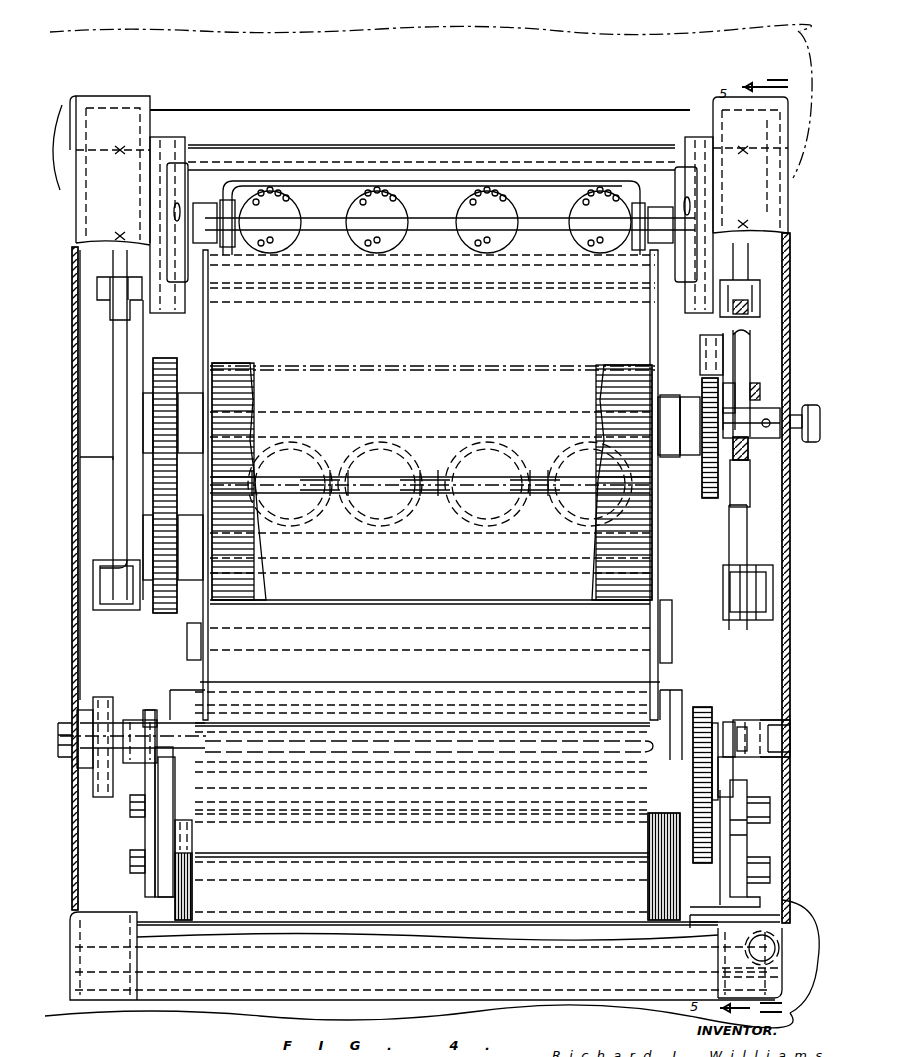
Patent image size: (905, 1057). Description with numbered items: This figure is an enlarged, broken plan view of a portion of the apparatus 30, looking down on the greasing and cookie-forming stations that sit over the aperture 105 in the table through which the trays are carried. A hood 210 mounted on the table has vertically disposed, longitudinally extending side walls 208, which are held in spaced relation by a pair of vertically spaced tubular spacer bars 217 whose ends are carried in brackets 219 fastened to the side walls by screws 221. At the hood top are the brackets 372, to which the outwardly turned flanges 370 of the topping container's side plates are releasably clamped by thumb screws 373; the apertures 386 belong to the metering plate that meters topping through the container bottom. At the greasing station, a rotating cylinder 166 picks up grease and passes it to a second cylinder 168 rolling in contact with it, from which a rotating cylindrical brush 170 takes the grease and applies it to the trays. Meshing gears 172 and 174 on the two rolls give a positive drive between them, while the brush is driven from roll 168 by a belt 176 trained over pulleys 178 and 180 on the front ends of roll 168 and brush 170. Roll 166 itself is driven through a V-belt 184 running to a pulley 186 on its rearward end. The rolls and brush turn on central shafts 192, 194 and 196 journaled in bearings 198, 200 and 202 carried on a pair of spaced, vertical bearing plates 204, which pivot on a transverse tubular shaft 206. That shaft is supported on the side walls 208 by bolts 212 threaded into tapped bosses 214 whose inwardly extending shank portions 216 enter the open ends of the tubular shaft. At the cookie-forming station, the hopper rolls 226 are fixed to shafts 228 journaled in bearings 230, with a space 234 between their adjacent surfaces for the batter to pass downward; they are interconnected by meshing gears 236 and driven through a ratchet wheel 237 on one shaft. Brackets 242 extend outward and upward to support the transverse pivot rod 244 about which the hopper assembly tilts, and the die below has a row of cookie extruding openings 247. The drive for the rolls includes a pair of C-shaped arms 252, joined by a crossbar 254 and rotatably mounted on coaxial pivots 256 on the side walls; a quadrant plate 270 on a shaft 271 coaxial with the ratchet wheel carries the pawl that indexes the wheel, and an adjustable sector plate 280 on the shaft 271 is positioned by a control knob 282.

The machine 30 is at (396, 31).
The aperture 105 is at (170, 690).
The rotating cylinder 166 is at (668, 695).
The second cylinder 168 is at (648, 745).
The cylindrical brush 170 is at (175, 905).
The gear 172 is at (705, 705).
The gear 174 is at (720, 862).
The belt 176 is at (718, 910).
The pulley 178 is at (737, 795).
The pulley 180 is at (750, 897).
The V-belt 184 is at (103, 710).
The pulley 186 is at (98, 705).
The shaft 192 is at (722, 722).
The shaft 194 is at (490, 822).
The shaft 196 is at (478, 883).
The bearing 198 is at (740, 767).
The bearing 200 is at (775, 808).
The bearing 202 is at (768, 883).
The bearing plate 204 is at (135, 838).
The tubular shaft 206 is at (765, 725).
The side wall 208 is at (75, 577).
The hood 210 is at (184, 996).
The bolt 212 is at (790, 740).
The tapped boss 214 is at (92, 760).
The shank portion 216 is at (125, 718).
The tubular spacer bar 217 is at (440, 110).
The bracket 219 is at (88, 165).
The screw 221 is at (78, 116).
The roll 226 is at (622, 368).
The shaft 228 is at (560, 408).
The bearing 230 is at (668, 395).
The space 234 is at (650, 490).
The meshing gear 236 is at (190, 370).
The ratchet wheel 237 is at (710, 502).
The bracket 242 is at (208, 616).
The pivot rod 244 is at (448, 652).
The cookie extruding opening 247 is at (372, 445).
The C-shaped arm 252 is at (125, 345).
The crossbar 254 is at (148, 610).
The pivot 256 is at (108, 525).
The quadrant plate 270 is at (747, 335).
The shaft 271 is at (800, 405).
The adjustable sector plate 280 is at (725, 378).
The control knob 282 is at (818, 407).
The flange 370 is at (188, 160).
The bracket 372 is at (168, 137).
The thumb screw 373 is at (174, 212).
The aperture 386 is at (300, 200).